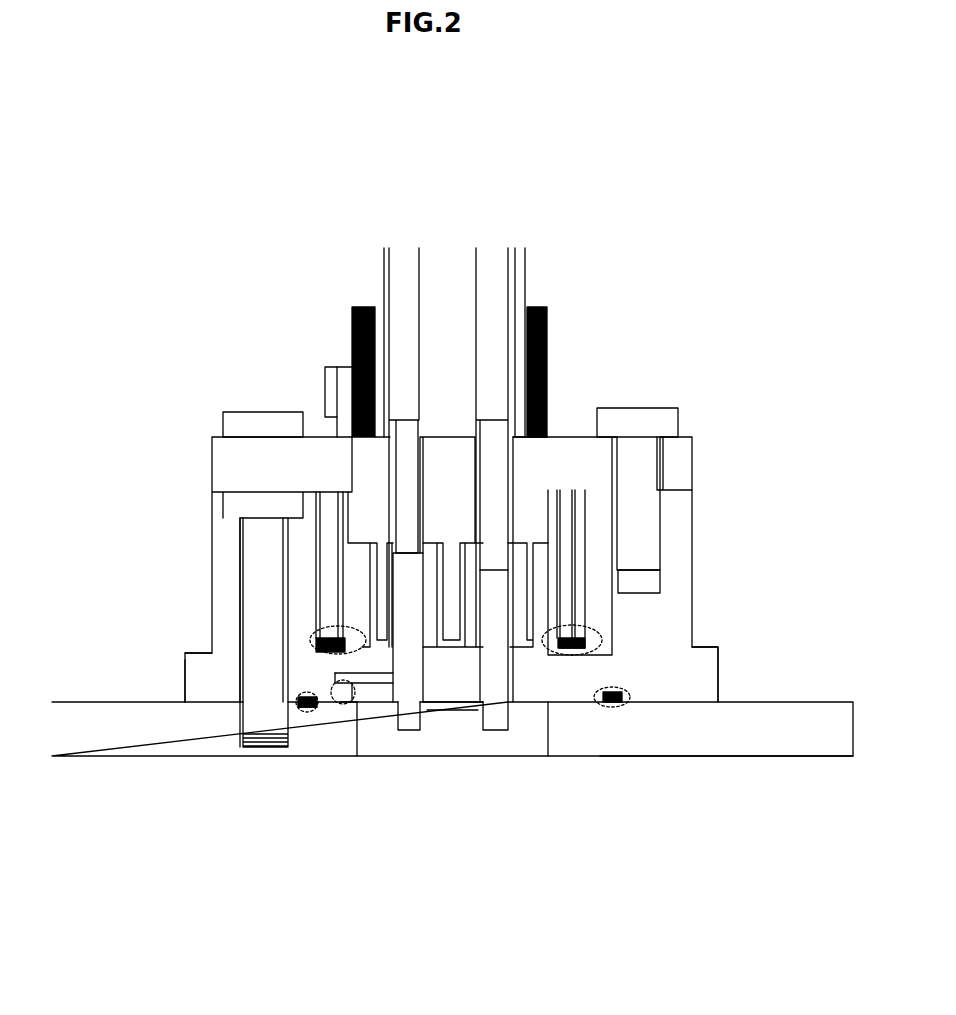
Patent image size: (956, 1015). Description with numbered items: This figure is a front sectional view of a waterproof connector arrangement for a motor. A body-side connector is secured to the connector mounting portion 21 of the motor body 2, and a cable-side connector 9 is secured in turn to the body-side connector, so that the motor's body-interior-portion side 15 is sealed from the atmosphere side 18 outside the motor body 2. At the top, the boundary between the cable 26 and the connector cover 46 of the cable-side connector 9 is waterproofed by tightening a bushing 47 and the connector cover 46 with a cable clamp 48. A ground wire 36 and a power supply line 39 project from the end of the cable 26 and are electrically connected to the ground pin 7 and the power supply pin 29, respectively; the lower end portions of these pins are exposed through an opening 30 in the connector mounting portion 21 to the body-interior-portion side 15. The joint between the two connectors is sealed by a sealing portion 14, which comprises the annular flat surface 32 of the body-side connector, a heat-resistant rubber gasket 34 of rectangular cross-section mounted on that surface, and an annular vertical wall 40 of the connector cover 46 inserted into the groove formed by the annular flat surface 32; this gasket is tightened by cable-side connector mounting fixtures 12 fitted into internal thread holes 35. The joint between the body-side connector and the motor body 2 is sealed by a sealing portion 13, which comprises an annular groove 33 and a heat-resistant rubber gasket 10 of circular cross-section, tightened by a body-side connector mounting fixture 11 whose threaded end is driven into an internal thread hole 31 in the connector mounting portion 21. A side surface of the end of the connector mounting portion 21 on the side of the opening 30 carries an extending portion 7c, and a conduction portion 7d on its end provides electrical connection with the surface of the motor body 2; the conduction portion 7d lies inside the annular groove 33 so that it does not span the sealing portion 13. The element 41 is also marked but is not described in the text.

The motor body 2 is at (783, 698).
The ground pin 7 is at (418, 670).
The extending portion 7c is at (372, 680).
The conduction portion 7d is at (333, 707).
The cable-side connector 9 is at (533, 483).
The gasket 10 is at (295, 708).
The body-side connector mounting fixture 11 is at (262, 510).
The cable-side connector mounting fixture 12 is at (267, 407).
The sealing portion 13 is at (328, 710).
The sealing portion 14 is at (312, 623).
The body-interior-portion side 15 is at (742, 777).
The atmosphere side 18 is at (790, 495).
The connector mounting portion 21 is at (183, 703).
The cable 26 is at (518, 248).
The pin for power supply 29 is at (505, 680).
The opening 30 is at (463, 723).
The internal thread hole 31 is at (240, 745).
The annular flat surface 32 is at (315, 655).
The annular groove 33 is at (627, 685).
The gasket 34 is at (318, 637).
The internal thread hole 35 is at (647, 580).
The ground wire 36 is at (413, 383).
The power supply line 39 is at (495, 383).
The annular vertical wall 40 is at (330, 588).
The joint 41 is at (350, 710).
The connector cover 46 is at (330, 447).
The bushing 47 is at (352, 313).
The cable clamp 48 is at (323, 365).